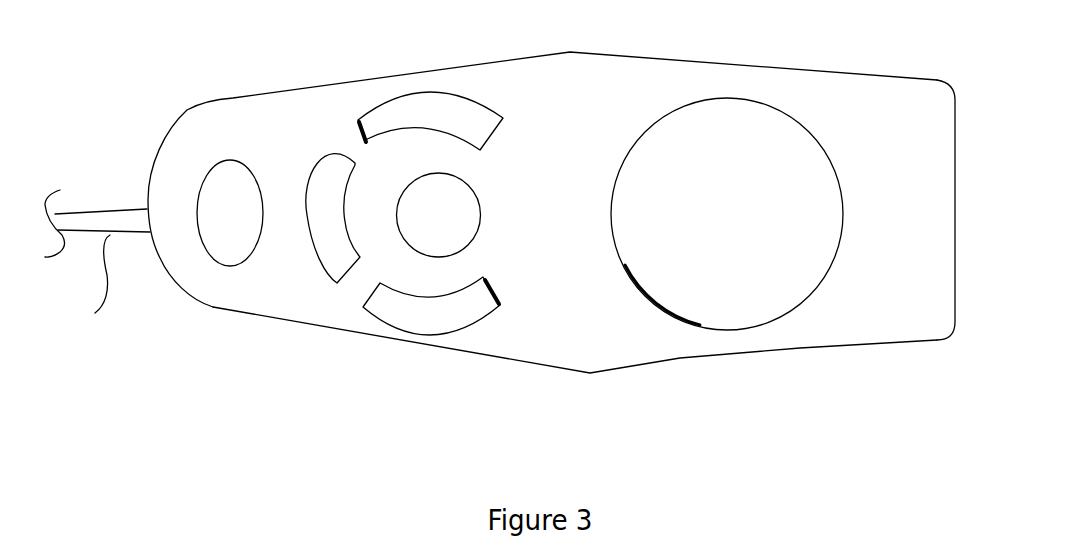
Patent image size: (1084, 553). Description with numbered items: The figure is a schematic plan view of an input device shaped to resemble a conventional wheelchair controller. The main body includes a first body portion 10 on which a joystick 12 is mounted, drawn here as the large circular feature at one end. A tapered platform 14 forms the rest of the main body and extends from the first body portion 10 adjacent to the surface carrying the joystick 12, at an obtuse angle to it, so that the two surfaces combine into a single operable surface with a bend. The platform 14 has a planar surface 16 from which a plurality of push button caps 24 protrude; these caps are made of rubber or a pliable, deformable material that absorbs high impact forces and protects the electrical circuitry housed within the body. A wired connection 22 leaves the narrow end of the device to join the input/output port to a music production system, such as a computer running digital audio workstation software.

The first body portion 10 is at (551, 232).
The joystick 12 is at (721, 225).
The tapered platform 14 is at (353, 358).
The planar surface 16 is at (287, 130).
The wired connection 22 is at (97, 269).
The push button caps 24 is at (417, 105).